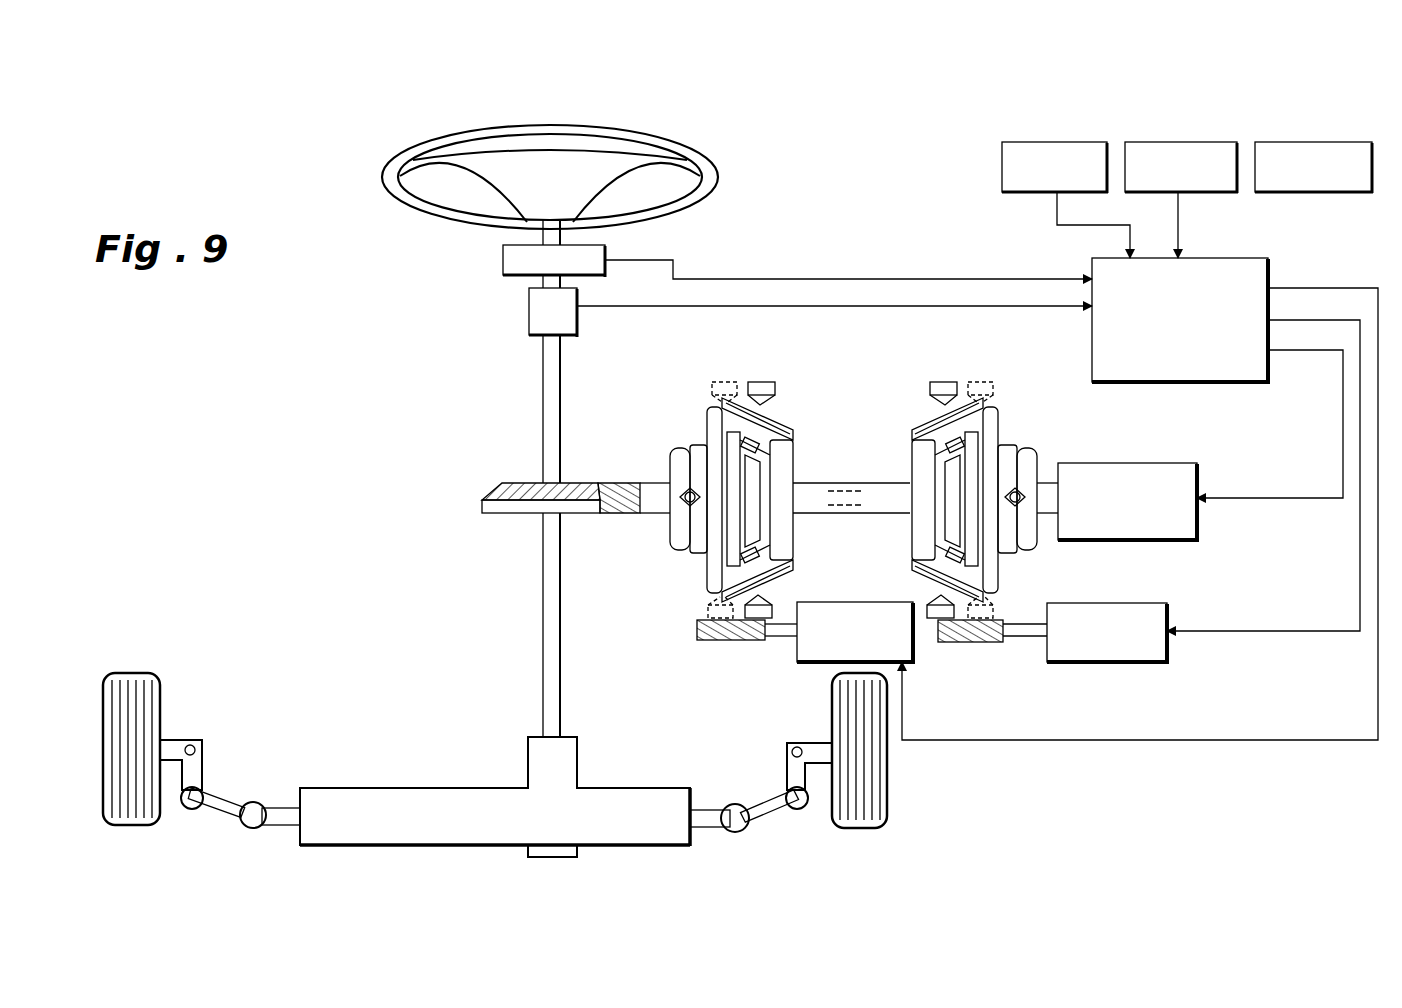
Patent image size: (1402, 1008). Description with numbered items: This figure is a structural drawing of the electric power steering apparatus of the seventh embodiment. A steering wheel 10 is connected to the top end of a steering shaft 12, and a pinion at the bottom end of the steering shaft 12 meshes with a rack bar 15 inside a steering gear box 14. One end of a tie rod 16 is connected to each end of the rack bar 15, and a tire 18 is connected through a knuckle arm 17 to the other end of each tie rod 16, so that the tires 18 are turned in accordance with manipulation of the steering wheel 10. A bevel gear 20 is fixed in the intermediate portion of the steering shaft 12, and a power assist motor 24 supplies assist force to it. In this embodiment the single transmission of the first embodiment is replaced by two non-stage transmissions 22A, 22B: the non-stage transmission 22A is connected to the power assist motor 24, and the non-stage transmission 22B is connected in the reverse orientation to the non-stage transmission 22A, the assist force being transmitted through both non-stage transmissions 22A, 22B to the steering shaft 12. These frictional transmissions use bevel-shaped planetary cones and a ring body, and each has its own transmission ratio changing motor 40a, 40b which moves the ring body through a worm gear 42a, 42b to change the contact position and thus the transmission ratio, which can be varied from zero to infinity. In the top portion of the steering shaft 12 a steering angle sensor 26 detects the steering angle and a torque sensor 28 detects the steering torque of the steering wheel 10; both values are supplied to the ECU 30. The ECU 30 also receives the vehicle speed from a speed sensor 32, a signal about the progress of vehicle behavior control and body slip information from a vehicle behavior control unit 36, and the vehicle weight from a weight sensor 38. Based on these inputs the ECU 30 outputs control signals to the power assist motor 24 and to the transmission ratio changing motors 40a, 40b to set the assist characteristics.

The steering wheel 10 is at (663, 138).
The steering shaft 12 is at (550, 407).
The steering gear box 14 is at (597, 845).
The rack bar 15 is at (288, 822).
The tie rod 16 is at (218, 812).
The knuckle arm 17 is at (205, 763).
The tire 18 is at (131, 827).
The bevel gear 20 is at (490, 500).
The non-stage transmission 22A is at (908, 440).
The non-stage transmission 22B is at (680, 443).
The power assist motor 24 is at (1188, 460).
The steering angle sensor 26 is at (503, 260).
The torque sensor 28 is at (528, 315).
The ECU (electronic control unit) 30 is at (1272, 277).
The speed sensor 32 is at (1043, 140).
The vehicle behavior control unit 36 is at (1176, 140).
The weight sensor 38 is at (1305, 140).
The transmission ratio changing motor 40a is at (1168, 612).
The transmission ratio changing motor 40b is at (838, 601).
The worm gear 42a is at (980, 648).
The worm gear 42b is at (705, 640).